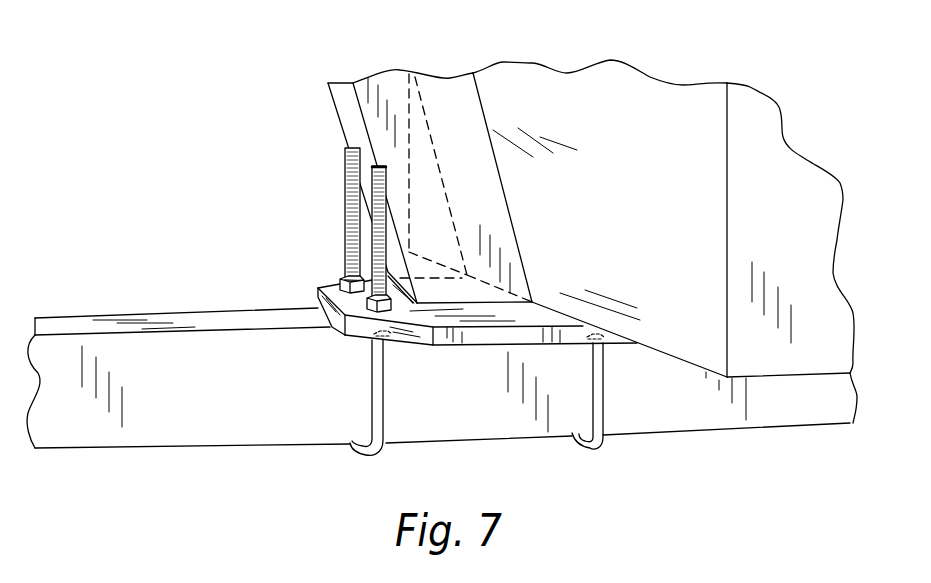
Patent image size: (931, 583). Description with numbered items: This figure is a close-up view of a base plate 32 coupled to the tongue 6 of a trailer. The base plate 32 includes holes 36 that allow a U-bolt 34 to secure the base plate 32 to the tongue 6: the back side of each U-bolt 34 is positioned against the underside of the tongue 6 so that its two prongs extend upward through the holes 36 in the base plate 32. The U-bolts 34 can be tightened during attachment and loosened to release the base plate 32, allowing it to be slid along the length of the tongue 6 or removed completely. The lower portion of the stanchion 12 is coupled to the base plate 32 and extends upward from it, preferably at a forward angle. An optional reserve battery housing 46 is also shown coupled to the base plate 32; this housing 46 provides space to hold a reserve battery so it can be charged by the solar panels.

The tongue 6 is at (243, 435).
The stanchion 12 is at (334, 103).
The base plate 32 is at (332, 287).
The U-bolt 34 is at (372, 388).
The holes 36 is at (395, 345).
The reserve battery housing 46 is at (662, 92).